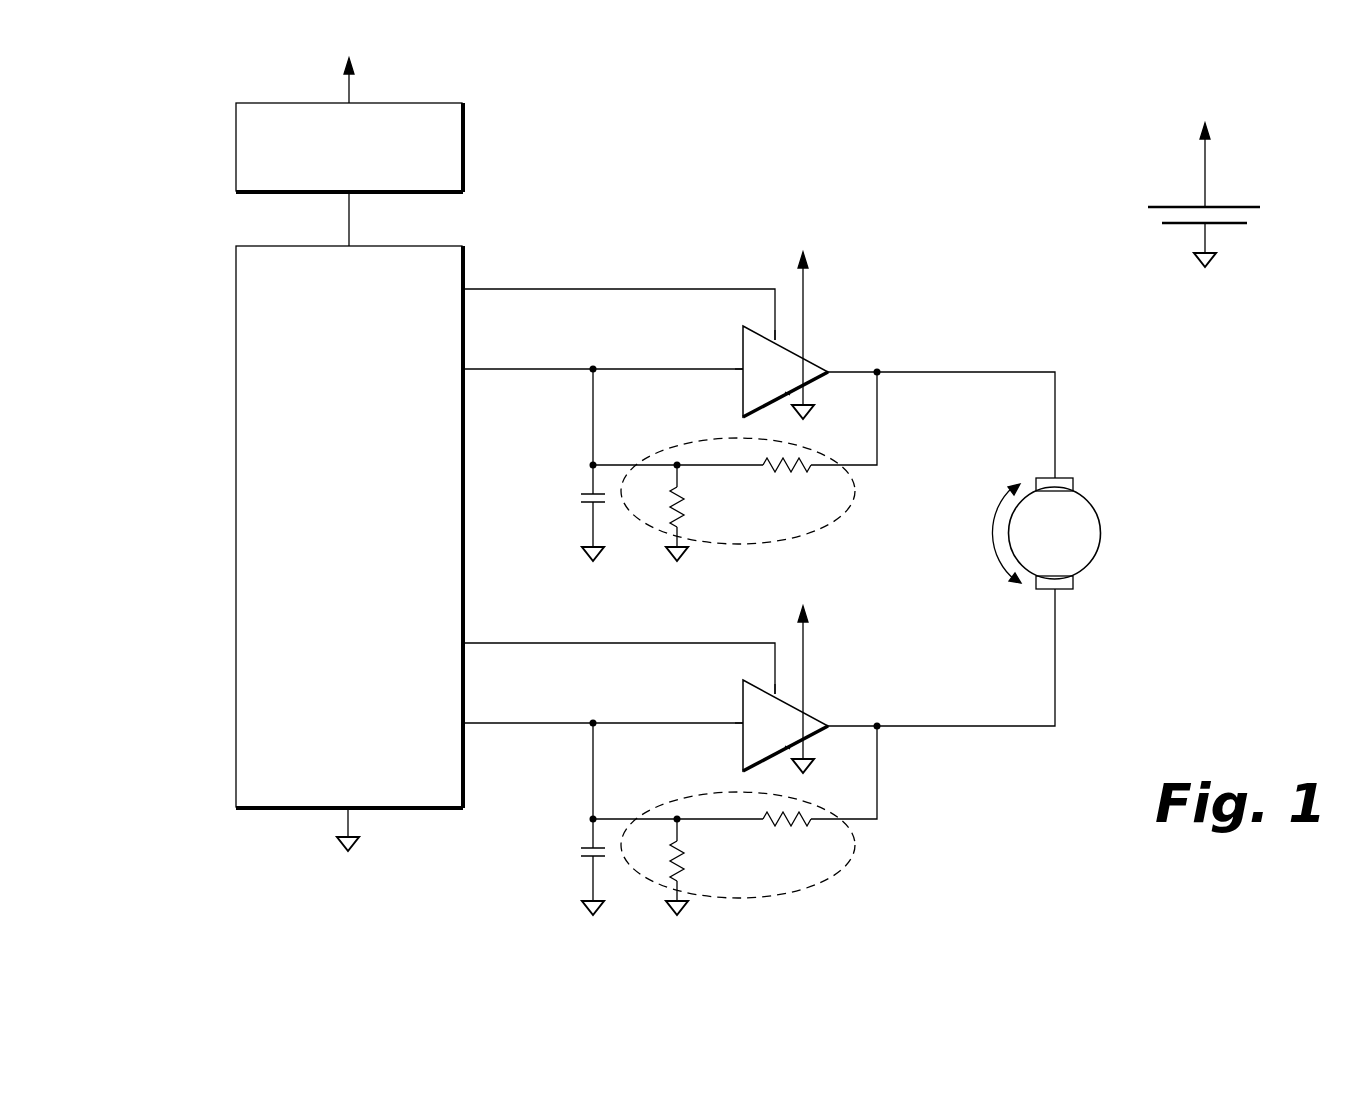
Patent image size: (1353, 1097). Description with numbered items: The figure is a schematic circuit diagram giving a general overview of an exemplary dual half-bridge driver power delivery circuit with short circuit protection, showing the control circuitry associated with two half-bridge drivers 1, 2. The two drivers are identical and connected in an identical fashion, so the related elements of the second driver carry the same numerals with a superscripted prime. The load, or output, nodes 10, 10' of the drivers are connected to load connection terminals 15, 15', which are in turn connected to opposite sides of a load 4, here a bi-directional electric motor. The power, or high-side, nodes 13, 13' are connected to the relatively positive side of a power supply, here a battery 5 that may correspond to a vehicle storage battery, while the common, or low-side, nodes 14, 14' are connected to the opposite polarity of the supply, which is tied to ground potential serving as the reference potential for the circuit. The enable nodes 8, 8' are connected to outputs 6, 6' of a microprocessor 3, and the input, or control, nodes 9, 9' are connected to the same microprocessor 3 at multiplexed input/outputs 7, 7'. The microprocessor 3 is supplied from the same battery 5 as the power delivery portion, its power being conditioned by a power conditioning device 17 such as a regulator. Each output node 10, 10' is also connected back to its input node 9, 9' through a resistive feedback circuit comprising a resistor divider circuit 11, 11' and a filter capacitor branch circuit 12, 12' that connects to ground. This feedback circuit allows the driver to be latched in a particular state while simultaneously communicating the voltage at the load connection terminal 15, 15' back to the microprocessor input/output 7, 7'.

The half-bridge driver 1 is at (818, 362).
The half-bridge driver 2 is at (818, 716).
The microprocessor 3 is at (417, 809).
The load 4 is at (1096, 496).
The battery 5 is at (1155, 207).
The output 6 is at (618, 285).
The multiplexed input/output 7 is at (602, 340).
The enable node 8 is at (720, 324).
The input node 9 is at (703, 399).
The output node 10 is at (872, 408).
The resistor divider circuit 11 is at (776, 466).
The filter capacitor branch circuit 12 is at (560, 464).
The power node 13 is at (767, 322).
The common node 14 is at (893, 415).
The load connection terminal 15 is at (965, 388).
The power conditioning device 17 is at (463, 128).
The output 6' is at (618, 639).
The multiplexed input/output 7' is at (602, 694).
The enable node 8' is at (718, 676).
The input node 9' is at (701, 753).
The output node 10' is at (874, 763).
The resistor divider circuit 11' is at (778, 820).
The filter capacitor branch circuit 12' is at (558, 818).
The power node 13' is at (764, 676).
The common node 14' is at (895, 769).
The load connection terminal 15' is at (965, 659).